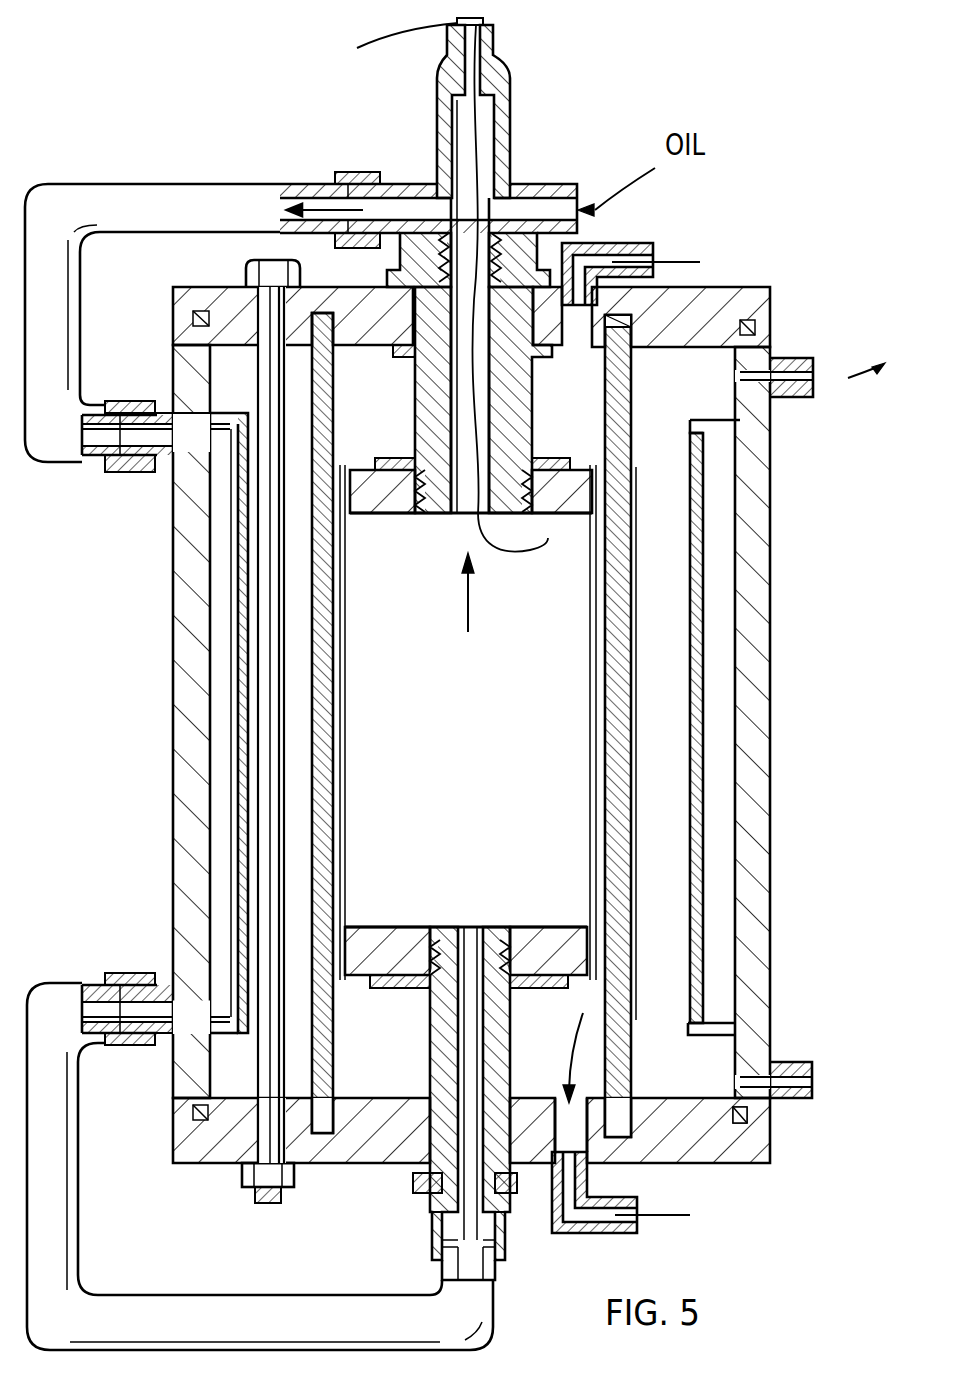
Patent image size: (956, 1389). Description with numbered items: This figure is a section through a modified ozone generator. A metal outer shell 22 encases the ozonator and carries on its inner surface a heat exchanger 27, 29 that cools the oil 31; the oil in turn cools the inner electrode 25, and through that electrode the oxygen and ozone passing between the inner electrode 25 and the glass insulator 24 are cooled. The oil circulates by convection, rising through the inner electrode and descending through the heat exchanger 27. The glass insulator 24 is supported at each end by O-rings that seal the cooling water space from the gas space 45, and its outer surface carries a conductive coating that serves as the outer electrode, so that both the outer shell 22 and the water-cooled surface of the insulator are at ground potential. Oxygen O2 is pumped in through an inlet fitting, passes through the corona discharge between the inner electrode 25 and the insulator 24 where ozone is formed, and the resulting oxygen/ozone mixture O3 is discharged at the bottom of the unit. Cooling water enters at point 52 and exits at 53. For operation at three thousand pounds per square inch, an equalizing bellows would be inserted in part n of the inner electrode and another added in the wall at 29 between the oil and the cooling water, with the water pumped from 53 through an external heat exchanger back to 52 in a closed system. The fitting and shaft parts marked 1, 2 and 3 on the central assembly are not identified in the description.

The inlet fitting 1 is at (440, 148).
The hub nut 2 is at (430, 340).
The lower shaft 3 is at (492, 1030).
The outer shell 22 is at (748, 613).
The glass insulator 24 is at (333, 390).
The inner electrode 25 is at (592, 570).
The heat exchanger 27 is at (227, 830).
The heat exchanger wall 29 is at (703, 808).
The oil 31 is at (382, 548).
The gas space 45 is at (386, 1077).
The cooling water inlet point 52 is at (782, 1083).
The cooling water outlet point 53 is at (786, 359).
The oxygen inlet elbow O2 is at (651, 274).
The oxygen outlet elbow O3 is at (639, 1173).
The bellows location in inner electrode n is at (557, 952).